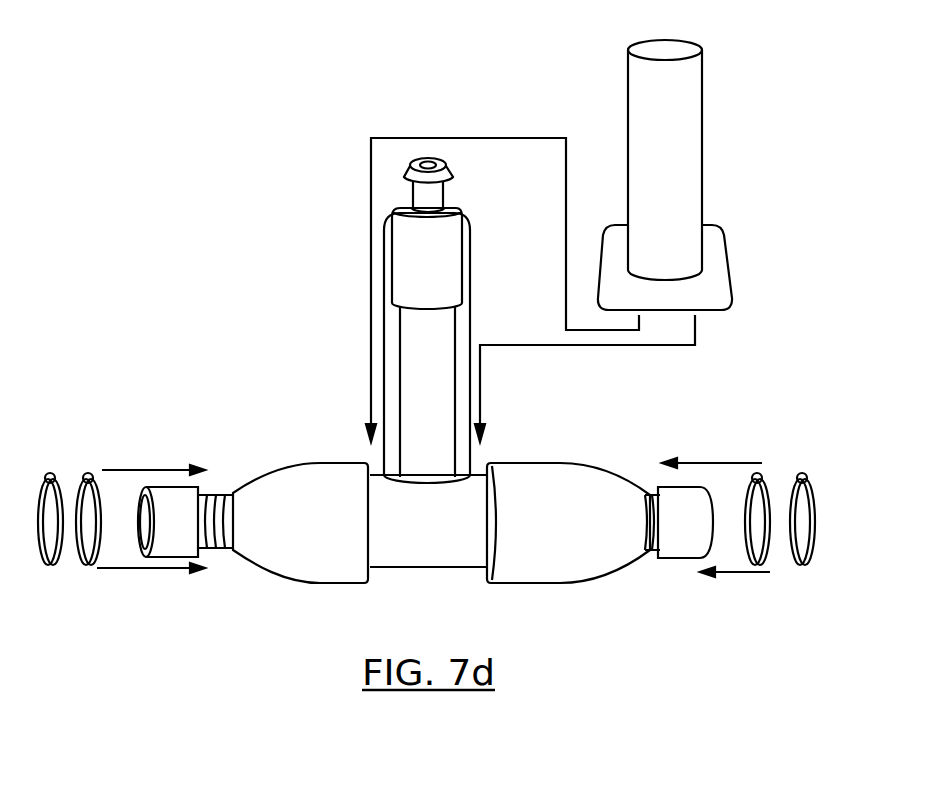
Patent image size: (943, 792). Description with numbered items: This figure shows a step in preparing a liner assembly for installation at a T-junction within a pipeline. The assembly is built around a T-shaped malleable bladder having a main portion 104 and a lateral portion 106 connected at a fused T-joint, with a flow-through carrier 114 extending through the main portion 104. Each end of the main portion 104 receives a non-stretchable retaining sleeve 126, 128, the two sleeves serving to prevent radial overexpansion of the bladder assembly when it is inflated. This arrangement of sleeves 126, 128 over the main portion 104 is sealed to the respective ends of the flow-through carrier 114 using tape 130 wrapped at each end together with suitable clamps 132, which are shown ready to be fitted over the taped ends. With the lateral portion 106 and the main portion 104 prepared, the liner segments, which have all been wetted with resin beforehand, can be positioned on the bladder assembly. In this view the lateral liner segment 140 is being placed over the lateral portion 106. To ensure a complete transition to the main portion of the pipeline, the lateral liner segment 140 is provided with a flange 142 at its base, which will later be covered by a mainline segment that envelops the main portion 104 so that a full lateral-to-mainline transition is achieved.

The main portion 104 is at (417, 537).
The lateral portion 106 is at (450, 366).
The flow-through carrier 114 is at (692, 542).
The non-stretchable retaining sleeve 126 is at (337, 485).
The non-stretchable retaining sleeve 128 is at (560, 487).
The tape 130 is at (210, 493).
The clamps 132 is at (88, 474).
The lateral liner segment 140 is at (673, 110).
The flange 142 is at (713, 258).